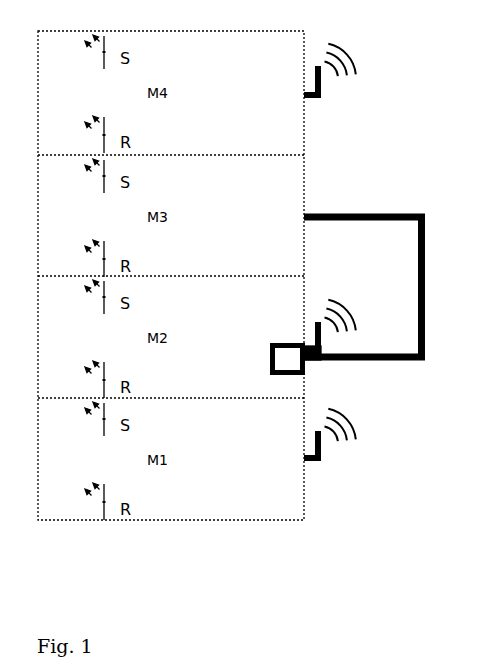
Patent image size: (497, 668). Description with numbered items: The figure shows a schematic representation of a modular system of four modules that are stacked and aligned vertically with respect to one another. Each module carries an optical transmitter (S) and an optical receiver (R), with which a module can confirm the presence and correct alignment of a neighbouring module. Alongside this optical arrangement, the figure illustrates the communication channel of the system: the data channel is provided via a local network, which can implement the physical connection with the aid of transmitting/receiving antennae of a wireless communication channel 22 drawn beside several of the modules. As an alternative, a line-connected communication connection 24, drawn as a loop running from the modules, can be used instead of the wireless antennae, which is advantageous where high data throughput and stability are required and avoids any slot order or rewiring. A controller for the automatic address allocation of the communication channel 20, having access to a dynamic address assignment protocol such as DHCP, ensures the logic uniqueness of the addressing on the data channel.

The controller for the automatic address allocation of the communication channel 20 is at (290, 328).
The transmitting/receiving antennae of a wireless communication channel 22 is at (334, 95).
The line-connected communication connection 24 is at (334, 210).